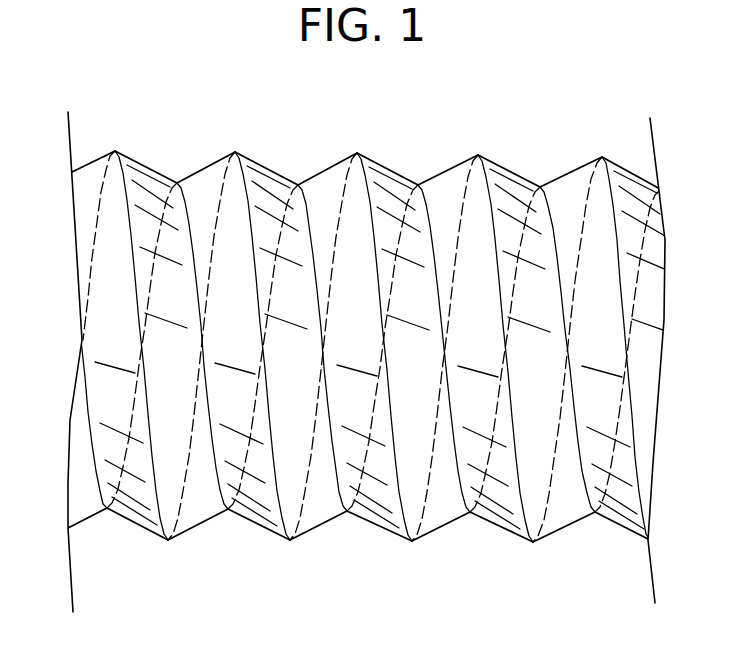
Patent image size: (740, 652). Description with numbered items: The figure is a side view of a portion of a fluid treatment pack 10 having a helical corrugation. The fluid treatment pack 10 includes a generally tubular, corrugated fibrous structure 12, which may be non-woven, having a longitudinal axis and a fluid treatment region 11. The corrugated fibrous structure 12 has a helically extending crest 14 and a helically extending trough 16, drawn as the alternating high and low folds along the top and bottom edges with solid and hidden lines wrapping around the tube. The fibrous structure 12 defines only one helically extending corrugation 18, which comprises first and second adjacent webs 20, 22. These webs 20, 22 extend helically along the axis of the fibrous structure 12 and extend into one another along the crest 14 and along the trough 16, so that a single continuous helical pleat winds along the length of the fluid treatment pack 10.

The fluid treatment pack 10 is at (133, 521).
The fluid treatment region 11 is at (252, 522).
The corrugated fibrous structure 12 is at (443, 527).
The helically extending crest 14 is at (115, 150).
The helically extending trough 16 is at (177, 183).
The helically extending corrugation 18 is at (378, 526).
The first web 20 is at (215, 161).
The second web 22 is at (262, 164).